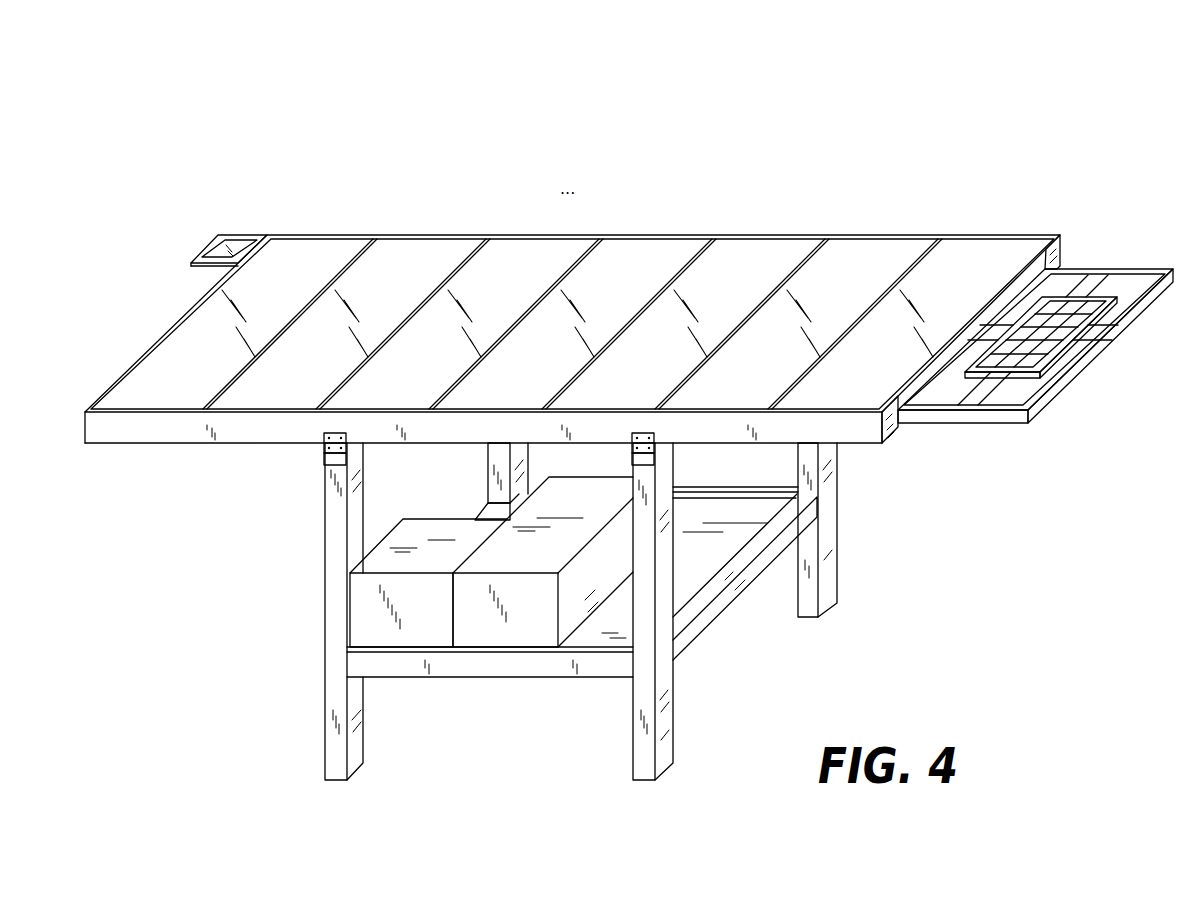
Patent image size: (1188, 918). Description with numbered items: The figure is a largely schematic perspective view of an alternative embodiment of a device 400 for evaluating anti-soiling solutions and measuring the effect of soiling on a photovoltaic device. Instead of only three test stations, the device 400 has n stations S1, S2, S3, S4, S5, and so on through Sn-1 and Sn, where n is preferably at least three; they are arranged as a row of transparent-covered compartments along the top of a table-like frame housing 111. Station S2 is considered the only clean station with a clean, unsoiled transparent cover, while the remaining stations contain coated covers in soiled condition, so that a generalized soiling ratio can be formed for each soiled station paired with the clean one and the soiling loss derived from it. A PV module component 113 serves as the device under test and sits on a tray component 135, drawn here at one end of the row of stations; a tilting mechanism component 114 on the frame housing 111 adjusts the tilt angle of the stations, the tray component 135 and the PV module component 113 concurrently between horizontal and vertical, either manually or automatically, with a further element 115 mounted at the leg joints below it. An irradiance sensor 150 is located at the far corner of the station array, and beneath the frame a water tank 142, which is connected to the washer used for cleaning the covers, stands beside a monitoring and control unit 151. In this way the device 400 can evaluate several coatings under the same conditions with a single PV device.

The device for evaluating anti-soiling solutions and measuring the effect of soiling 400 is at (481, 89).
The irradiance sensor 150 is at (222, 248).
The frame housing 111 is at (417, 443).
The tilting mechanism component 114 is at (323, 436).
The lower bracket 115 is at (322, 458).
The monitoring and control unit 151 is at (363, 622).
The water tank 142 is at (532, 636).
The PV module component 113 is at (1072, 328).
The tray component 135 is at (1066, 364).
The station S1 is at (1141, 268).
The station S2 is at (1001, 235).
The station S3 is at (885, 235).
The station S4 is at (788, 235).
The station S5 is at (684, 235).
The station Sn is at (325, 235).
The station Sn-1 is at (432, 235).